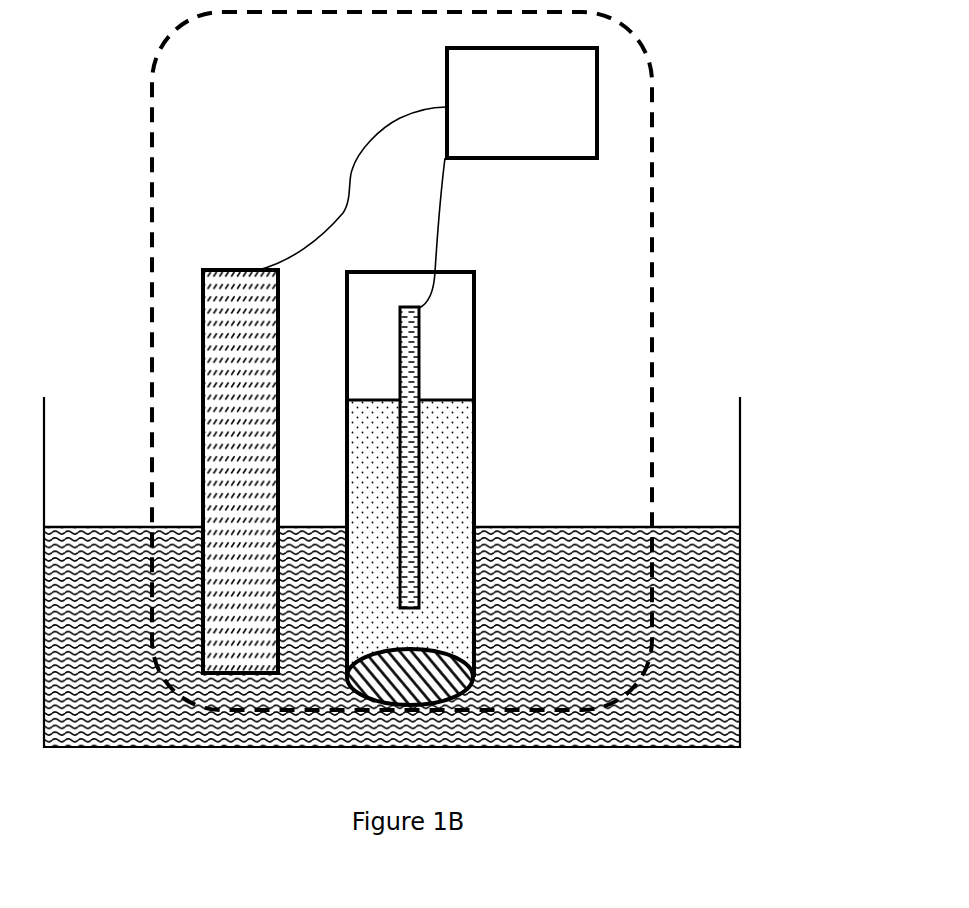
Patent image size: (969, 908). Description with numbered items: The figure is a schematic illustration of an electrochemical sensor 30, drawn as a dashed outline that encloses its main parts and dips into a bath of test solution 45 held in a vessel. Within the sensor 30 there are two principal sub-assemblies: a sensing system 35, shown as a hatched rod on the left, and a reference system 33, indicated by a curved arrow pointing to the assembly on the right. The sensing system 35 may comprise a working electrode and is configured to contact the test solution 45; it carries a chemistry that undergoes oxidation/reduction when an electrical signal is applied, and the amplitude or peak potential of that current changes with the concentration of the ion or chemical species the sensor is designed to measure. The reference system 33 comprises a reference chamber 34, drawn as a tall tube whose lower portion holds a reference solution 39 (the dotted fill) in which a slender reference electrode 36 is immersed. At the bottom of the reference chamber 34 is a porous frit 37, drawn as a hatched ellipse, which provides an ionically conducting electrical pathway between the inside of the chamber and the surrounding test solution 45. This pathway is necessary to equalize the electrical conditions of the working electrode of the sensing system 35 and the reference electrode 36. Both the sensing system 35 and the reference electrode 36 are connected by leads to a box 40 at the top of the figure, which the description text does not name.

The electrochemical sensor 30 is at (652, 303).
The reference system 33 is at (511, 306).
The reference chamber 34 is at (474, 450).
The sensing system 35 is at (203, 360).
The reference electrode 36 is at (420, 378).
The porous frit 37 is at (423, 685).
The reference solution 39 is at (458, 485).
The controller 40 is at (505, 109).
The test solution 45 is at (684, 654).